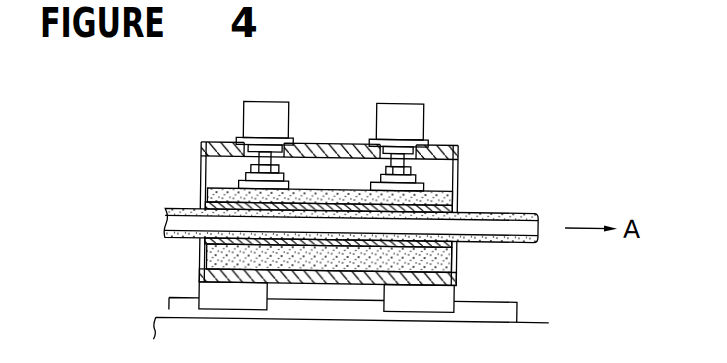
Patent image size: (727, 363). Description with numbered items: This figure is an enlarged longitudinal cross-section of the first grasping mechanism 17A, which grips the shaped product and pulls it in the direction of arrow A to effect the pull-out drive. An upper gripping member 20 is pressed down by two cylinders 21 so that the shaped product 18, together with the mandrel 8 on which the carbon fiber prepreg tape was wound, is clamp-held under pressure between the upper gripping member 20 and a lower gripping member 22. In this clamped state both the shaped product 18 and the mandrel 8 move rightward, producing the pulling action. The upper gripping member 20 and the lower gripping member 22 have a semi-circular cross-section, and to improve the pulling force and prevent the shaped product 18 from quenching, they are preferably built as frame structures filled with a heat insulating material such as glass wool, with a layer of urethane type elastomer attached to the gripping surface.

The first grasping mechanism 17A is at (337, 144).
The cylinders 21 is at (260, 127).
The upper gripping member 20 is at (210, 191).
The lower gripping member 22 is at (206, 255).
The shaped product 18 is at (505, 210).
The mandrel 8 is at (493, 229).